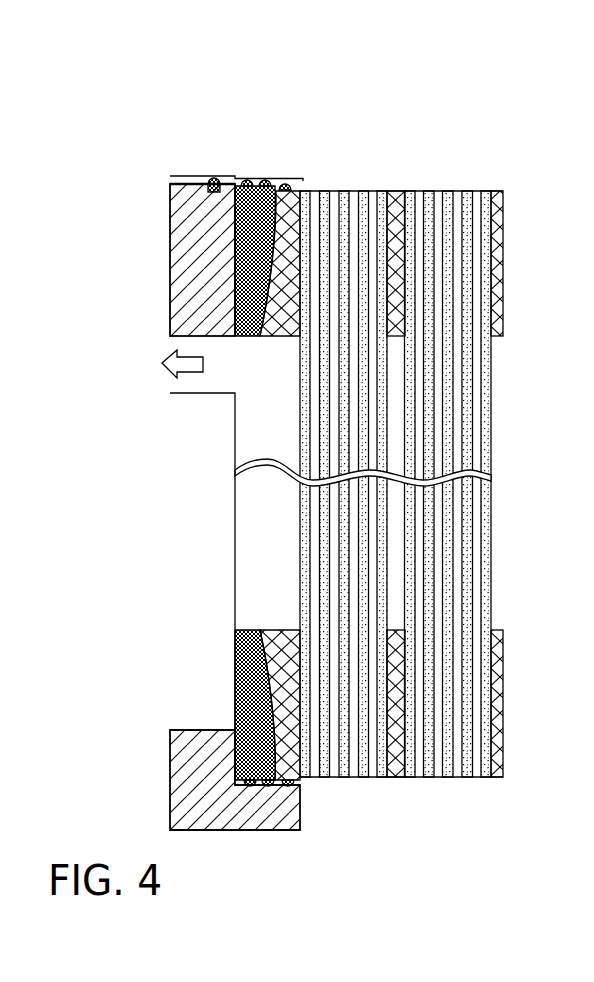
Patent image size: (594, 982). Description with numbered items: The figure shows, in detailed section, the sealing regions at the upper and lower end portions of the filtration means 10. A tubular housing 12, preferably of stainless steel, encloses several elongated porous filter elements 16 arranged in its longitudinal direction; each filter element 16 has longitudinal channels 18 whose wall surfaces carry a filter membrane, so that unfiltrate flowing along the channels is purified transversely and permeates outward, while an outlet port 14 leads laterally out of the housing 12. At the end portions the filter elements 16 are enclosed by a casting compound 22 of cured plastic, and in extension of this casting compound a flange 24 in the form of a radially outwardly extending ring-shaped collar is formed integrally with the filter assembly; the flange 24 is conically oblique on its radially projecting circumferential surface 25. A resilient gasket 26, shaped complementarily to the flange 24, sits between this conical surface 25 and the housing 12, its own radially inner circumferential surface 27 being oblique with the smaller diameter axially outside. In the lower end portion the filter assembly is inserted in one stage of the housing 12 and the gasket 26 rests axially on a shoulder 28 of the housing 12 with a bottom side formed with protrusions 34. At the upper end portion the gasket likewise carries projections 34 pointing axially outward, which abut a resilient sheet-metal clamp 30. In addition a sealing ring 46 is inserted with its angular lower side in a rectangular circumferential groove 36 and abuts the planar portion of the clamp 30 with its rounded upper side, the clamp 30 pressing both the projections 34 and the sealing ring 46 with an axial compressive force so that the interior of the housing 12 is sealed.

The filtration means 10 is at (356, 70).
The housing 12 is at (203, 255).
The outlet port 14 is at (160, 380).
The filter element 16 is at (447, 500).
The longitudinal channel 18 is at (420, 345).
The casting compound 22 is at (393, 203).
The flange 24 is at (288, 215).
The circumferential surface 25 is at (250, 302).
The gasket 26 is at (258, 185).
The circumferential surface 27 is at (228, 485).
The shoulder 28 is at (265, 808).
The clamp 30 is at (188, 177).
The projection 34 is at (287, 190).
The circumferential groove 36 is at (203, 203).
The sealing ring 46 is at (213, 177).